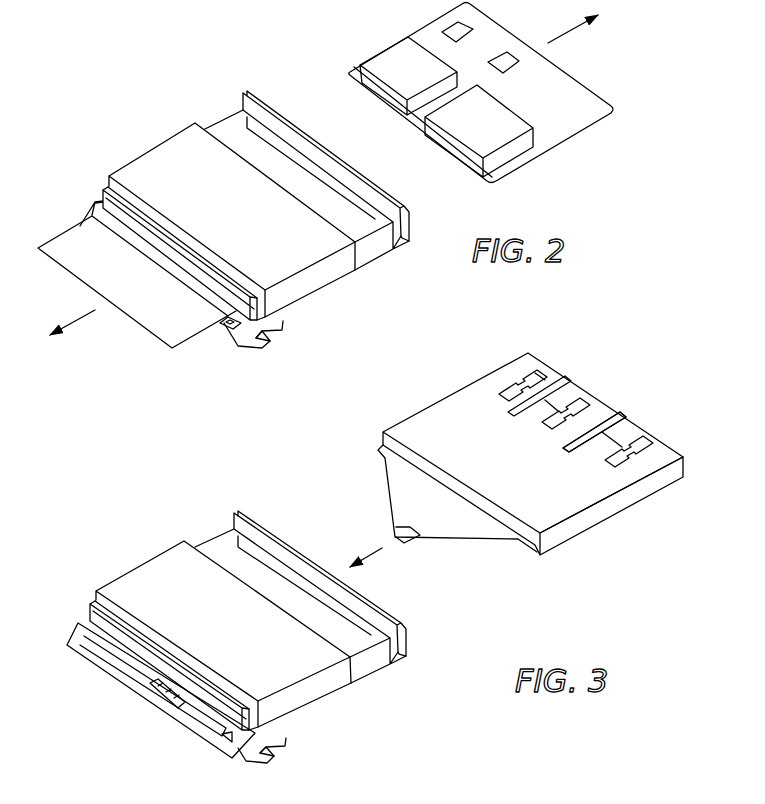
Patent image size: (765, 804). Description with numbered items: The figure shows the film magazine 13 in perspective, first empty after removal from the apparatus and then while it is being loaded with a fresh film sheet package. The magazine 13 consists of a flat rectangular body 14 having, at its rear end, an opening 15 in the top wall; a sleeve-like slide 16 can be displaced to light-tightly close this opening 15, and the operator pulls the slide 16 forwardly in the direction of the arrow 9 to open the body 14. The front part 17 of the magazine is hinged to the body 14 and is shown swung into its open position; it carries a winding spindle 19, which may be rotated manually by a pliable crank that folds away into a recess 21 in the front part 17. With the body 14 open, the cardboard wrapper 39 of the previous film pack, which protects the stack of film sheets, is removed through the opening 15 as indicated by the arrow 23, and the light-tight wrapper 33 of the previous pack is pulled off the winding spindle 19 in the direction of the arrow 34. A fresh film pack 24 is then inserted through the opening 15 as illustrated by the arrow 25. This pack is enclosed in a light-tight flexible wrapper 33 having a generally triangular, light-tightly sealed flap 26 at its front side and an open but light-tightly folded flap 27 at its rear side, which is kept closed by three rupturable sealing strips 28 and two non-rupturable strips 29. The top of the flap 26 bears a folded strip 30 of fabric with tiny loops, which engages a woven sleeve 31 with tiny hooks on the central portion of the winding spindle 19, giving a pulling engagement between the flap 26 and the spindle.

In FIG. 2, the arrow 9 is at (250, 195).
In FIG. 3, the arrow 9 is at (222, 635).
In FIG. 2, the magazine 13 is at (153, 128).
In FIG. 3, the magazine 13 is at (145, 550).
In FIG. 2, the body 14 is at (382, 242).
In FIG. 3, the body 14 is at (377, 652).
In FIG. 2, the opening 15 is at (330, 202).
In FIG. 3, the opening 15 is at (230, 557).
In FIG. 2, the slide 16 is at (315, 281).
In FIG. 3, the slide 16 is at (337, 683).
In FIG. 2, the front part 17 is at (247, 338).
In FIG. 3, the front part 17 is at (246, 762).
In FIG. 2, the winding spindle 19 is at (220, 327).
In FIG. 3, the winding spindle 19 is at (120, 663).
In FIG. 2, the recess 21 is at (273, 336).
In FIG. 3, the recess 21 is at (276, 750).
In FIG. 2, the arrow 23 is at (481, 91).
In FIG. 3, the film pack 24 is at (513, 481).
In FIG. 3, the arrow 25 is at (365, 552).
In FIG. 3, the flap 26 is at (473, 525).
In FIG. 3, the flap 27 is at (628, 430).
In FIG. 3, the rupturable sealing strips 28 is at (542, 422).
In FIG. 3, the non-rupturable strips 29 is at (603, 427).
In FIG. 3, the folded strip 30 is at (418, 543).
In FIG. 3, the woven sleeve 31 is at (160, 692).
In FIG. 2, the light-tight wrapper 33 is at (87, 268).
In FIG. 3, the light-tight wrapper 33 is at (588, 520).
In FIG. 2, the arrow 34 is at (77, 323).
In FIG. 2, the cardboard wrapper 39 is at (580, 120).